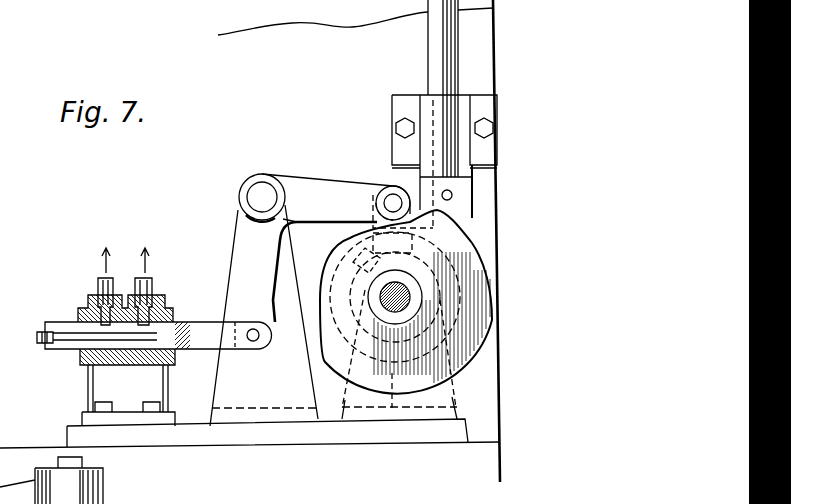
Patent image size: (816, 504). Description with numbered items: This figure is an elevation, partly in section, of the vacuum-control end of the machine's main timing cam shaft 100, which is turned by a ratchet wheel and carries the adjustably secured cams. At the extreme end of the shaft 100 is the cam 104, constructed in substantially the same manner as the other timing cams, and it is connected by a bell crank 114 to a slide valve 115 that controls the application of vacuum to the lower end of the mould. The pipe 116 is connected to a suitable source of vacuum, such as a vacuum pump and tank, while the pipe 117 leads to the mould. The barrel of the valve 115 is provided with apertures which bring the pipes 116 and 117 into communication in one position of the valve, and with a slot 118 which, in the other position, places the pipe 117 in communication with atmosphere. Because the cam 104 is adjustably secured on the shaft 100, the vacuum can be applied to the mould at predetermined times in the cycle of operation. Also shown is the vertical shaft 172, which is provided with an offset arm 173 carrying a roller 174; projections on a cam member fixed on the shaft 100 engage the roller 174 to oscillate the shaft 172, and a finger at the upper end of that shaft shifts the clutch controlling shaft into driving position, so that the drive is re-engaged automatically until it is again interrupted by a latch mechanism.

The transverse shaft 100 is at (413, 297).
The cam 104 is at (480, 242).
The bell crank 114 is at (327, 167).
The slide valve 115 is at (180, 322).
The pipe 116 is at (150, 282).
The pipe 117 is at (100, 286).
The slot 118 is at (70, 320).
The vertical shaft 172 is at (443, 63).
The offset arm 173 is at (356, 190).
The roller 174 is at (373, 242).